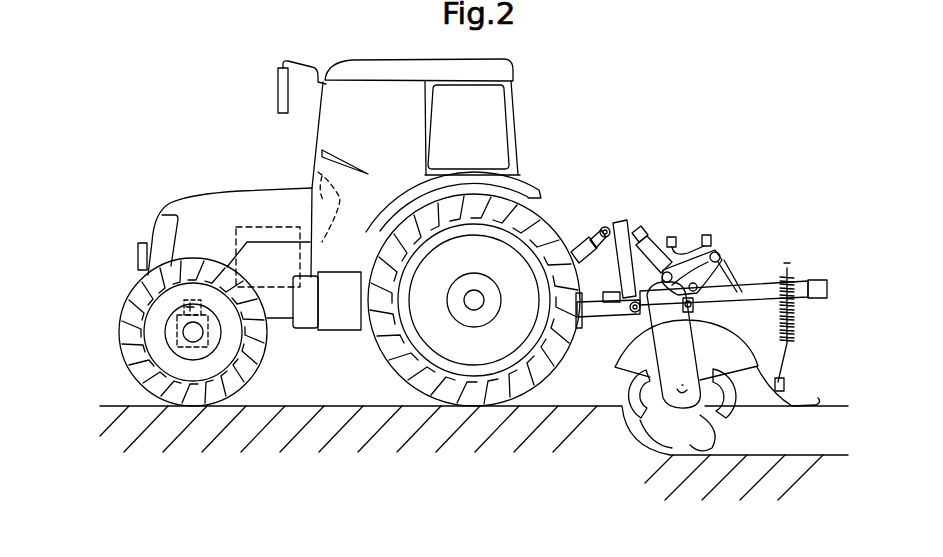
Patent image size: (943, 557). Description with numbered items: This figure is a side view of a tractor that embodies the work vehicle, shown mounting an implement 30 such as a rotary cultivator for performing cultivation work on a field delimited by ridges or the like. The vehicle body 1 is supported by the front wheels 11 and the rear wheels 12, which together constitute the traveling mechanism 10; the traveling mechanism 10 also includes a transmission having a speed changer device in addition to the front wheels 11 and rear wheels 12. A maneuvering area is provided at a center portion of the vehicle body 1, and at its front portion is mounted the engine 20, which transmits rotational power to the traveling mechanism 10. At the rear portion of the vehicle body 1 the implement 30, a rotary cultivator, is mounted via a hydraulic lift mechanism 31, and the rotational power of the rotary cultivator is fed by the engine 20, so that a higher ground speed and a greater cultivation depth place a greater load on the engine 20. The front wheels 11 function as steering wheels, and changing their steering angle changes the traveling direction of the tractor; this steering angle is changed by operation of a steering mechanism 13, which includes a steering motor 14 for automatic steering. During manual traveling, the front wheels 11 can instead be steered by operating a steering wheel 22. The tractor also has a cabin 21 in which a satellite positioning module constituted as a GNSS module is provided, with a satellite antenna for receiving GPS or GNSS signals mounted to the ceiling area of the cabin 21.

The vehicle body 1 is at (333, 278).
The traveling mechanism 10 is at (357, 353).
The front wheels 11 is at (188, 407).
The rear wheels 12 is at (487, 388).
The steering mechanism 13 is at (170, 331).
The steering motor 14 is at (178, 311).
The engine 20 is at (267, 222).
The cabin 21 is at (497, 68).
The steering wheel 22 is at (338, 158).
The implement 30 is at (679, 446).
The hydraulic lift mechanism 31 is at (632, 209).